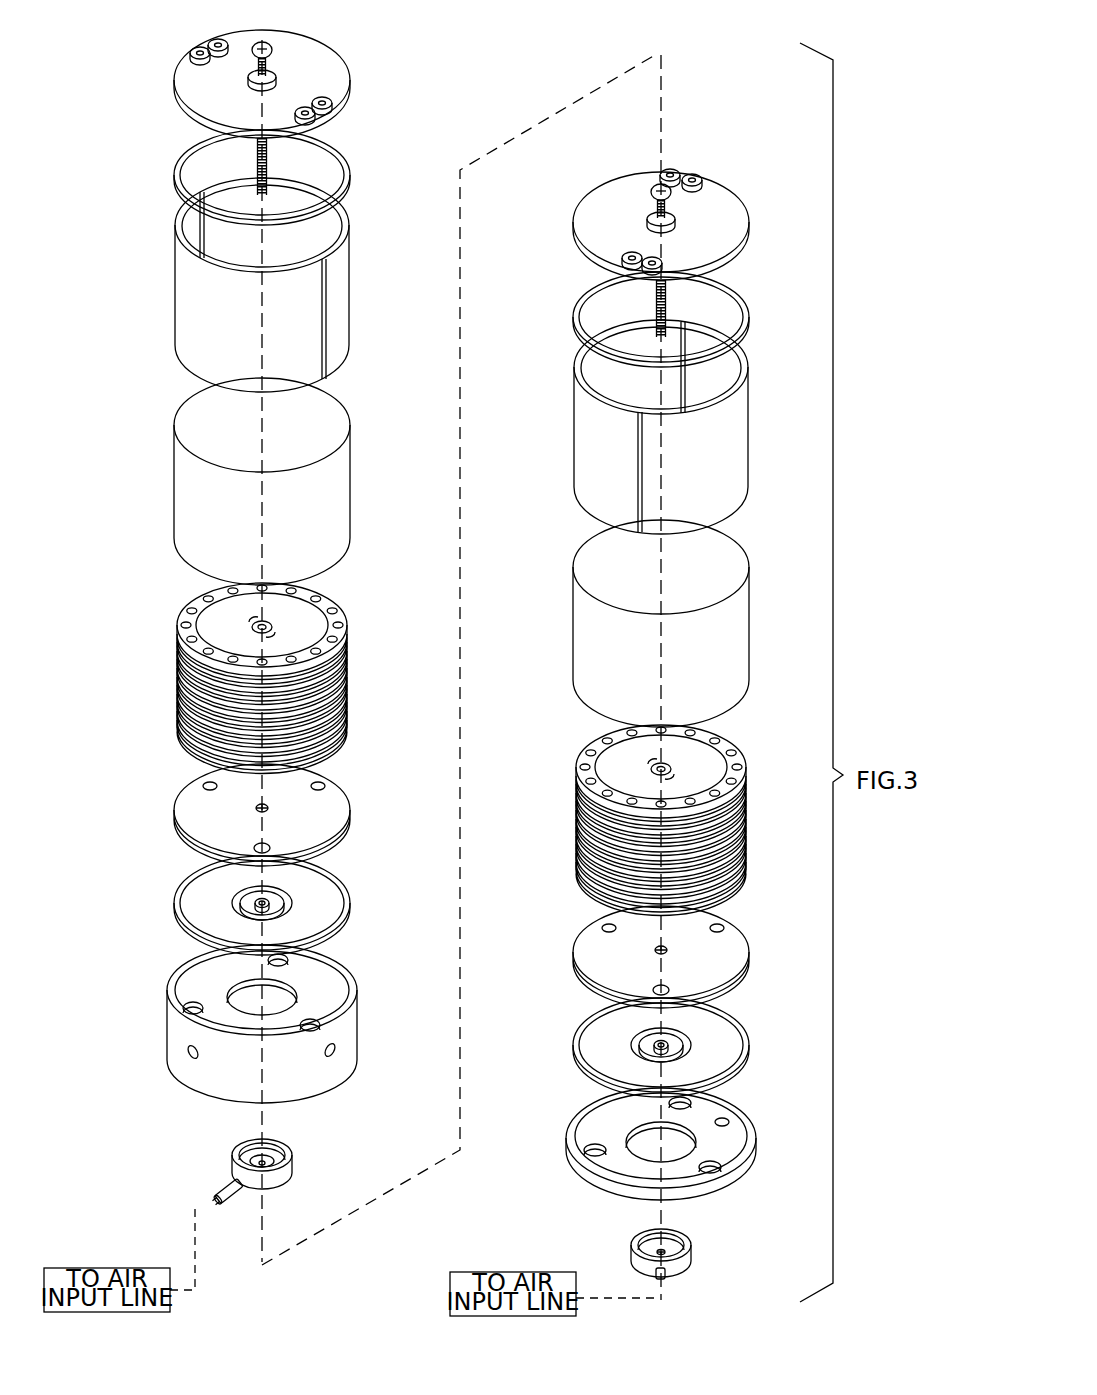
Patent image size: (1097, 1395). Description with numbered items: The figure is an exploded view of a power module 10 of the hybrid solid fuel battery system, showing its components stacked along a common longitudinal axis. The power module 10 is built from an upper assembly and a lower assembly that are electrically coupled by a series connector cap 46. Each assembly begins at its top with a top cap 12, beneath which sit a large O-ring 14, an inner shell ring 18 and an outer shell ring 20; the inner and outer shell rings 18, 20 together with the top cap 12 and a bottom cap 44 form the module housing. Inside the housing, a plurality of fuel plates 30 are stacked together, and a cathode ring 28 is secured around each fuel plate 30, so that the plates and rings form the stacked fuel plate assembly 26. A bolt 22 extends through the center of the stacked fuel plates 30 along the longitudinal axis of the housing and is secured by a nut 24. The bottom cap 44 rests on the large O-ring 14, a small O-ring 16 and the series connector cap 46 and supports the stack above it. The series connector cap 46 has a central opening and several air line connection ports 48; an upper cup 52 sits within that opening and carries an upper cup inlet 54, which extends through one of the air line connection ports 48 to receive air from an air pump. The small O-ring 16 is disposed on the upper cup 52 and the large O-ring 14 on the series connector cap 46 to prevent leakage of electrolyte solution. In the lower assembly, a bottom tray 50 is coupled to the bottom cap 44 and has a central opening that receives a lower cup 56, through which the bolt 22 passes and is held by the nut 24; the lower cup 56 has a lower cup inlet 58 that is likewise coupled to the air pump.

The power module 10 is at (228, 618).
The top cap 12 is at (238, 112).
The large O-ring 14 is at (238, 535).
The small O-ring 16 is at (209, 897).
The inner shell ring 18 is at (260, 285).
The outer shell ring 20 is at (230, 481).
The bolt 22 is at (290, 66).
The nut 24 is at (315, 928).
The stacked fuel plate assembly 26 is at (266, 657).
The cathode ring 28 is at (237, 625).
The fuel plate 30 is at (288, 625).
The bottom cap 44 is at (238, 815).
The series connector cap 46 is at (182, 958).
The air line connection port 48 is at (195, 1062).
The bottom tray 50 is at (605, 1180).
The upper cup 52 is at (238, 1150).
The upper cup inlet 54 is at (225, 1185).
The lower cup 56 is at (688, 1235).
The lower cup inlet 58 is at (663, 1282).